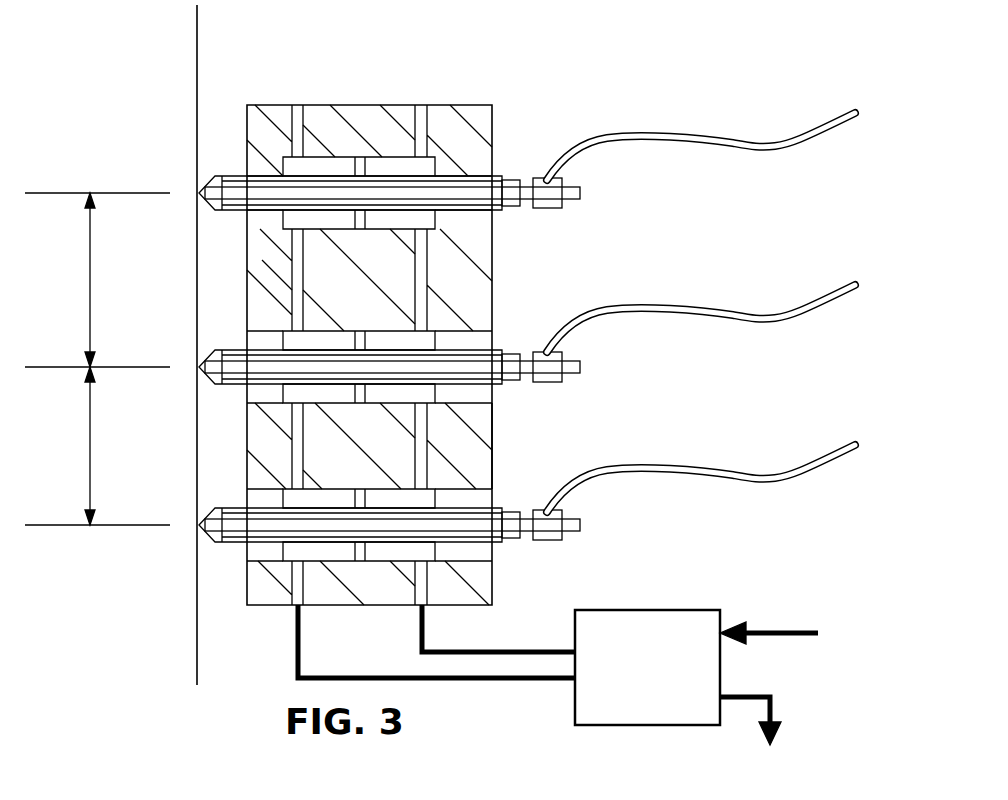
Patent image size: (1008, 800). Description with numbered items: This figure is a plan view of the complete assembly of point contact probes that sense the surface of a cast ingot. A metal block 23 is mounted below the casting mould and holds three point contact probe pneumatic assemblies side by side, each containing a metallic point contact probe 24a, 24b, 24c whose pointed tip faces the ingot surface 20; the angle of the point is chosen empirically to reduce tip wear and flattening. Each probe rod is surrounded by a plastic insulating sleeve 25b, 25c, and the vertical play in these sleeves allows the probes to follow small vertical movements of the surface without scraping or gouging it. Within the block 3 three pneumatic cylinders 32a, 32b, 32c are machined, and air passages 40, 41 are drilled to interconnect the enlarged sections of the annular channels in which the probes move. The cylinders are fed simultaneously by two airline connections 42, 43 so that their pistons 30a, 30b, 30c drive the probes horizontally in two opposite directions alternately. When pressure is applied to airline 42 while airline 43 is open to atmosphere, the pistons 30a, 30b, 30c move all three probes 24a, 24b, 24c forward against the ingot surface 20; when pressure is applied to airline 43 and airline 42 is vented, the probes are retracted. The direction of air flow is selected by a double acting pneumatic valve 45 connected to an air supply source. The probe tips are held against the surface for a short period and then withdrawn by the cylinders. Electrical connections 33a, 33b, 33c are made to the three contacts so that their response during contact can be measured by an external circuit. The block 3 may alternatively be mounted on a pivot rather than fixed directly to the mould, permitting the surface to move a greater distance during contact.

The block 3 is at (385, 105).
The ingot surface 20 is at (197, 68).
The metal block 23 is at (376, 139).
The point contact probe 24a is at (197, 518).
The point contact probe 24b is at (197, 360).
The point contact probe 24c is at (197, 188).
The insulating sleeve 25b is at (460, 348).
The insulating sleeve 25c is at (470, 180).
The piston 30a is at (355, 563).
The piston 30b is at (365, 405).
The piston 30c is at (360, 230).
The pneumatic cylinder 32a is at (300, 575).
The pneumatic cylinder 32b is at (300, 418).
The pneumatic cylinder 32c is at (295, 232).
The electrical connection 33a is at (765, 478).
The electrical connection 33b is at (765, 312).
The electrical connection 33c is at (765, 140).
The air passage 40 is at (290, 272).
The air passage 41 is at (493, 441).
The airline connection 42 is at (296, 648).
The airline connection 43 is at (500, 652).
The double acting pneumatic valve 45 is at (665, 672).